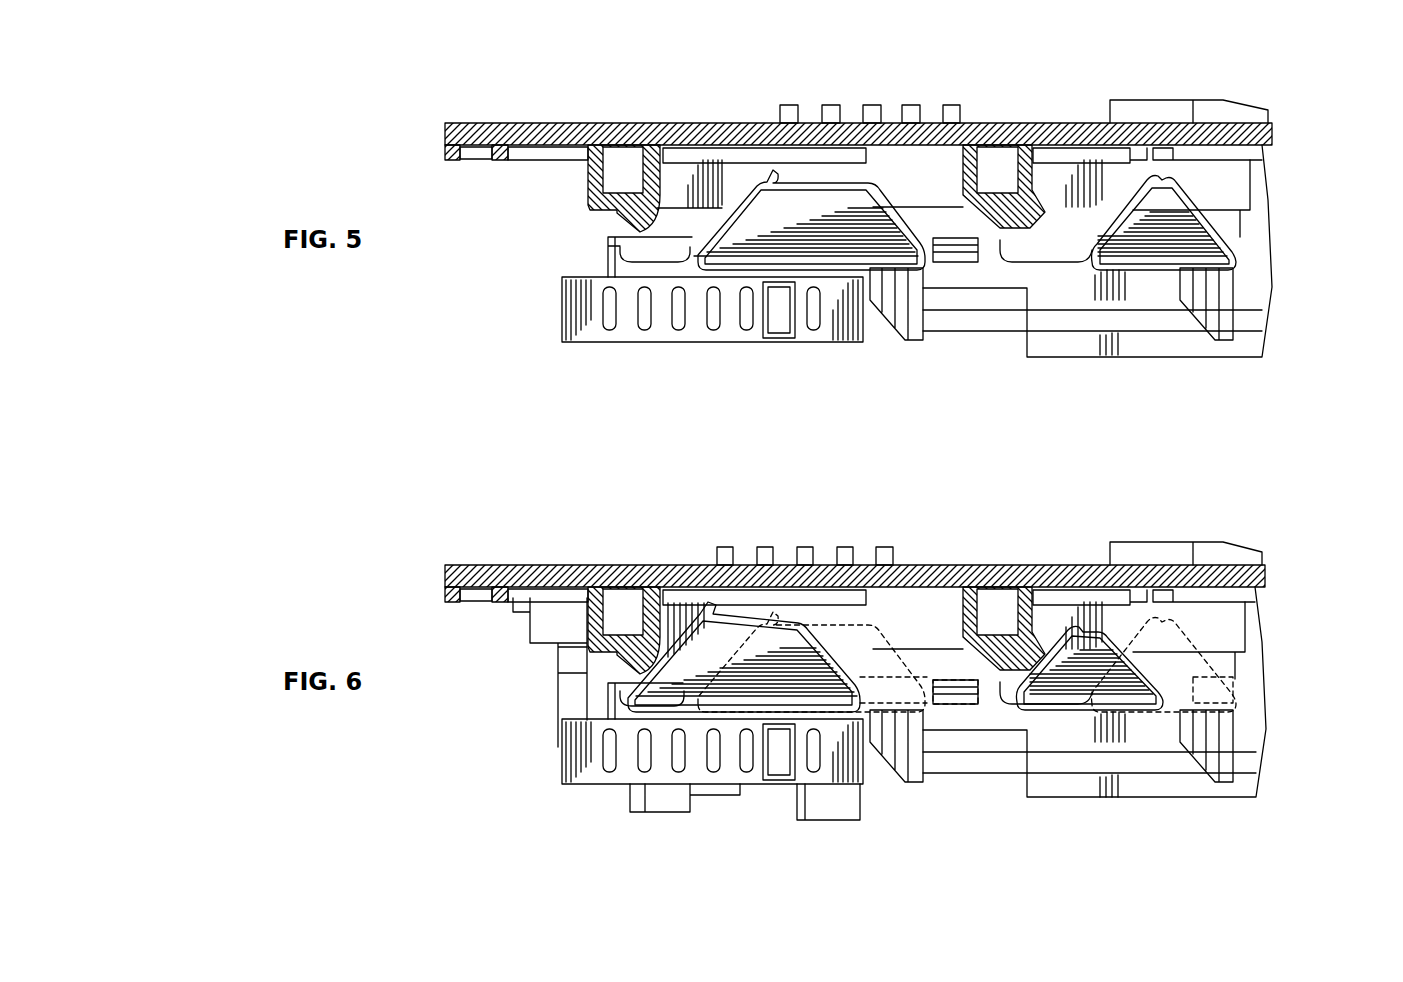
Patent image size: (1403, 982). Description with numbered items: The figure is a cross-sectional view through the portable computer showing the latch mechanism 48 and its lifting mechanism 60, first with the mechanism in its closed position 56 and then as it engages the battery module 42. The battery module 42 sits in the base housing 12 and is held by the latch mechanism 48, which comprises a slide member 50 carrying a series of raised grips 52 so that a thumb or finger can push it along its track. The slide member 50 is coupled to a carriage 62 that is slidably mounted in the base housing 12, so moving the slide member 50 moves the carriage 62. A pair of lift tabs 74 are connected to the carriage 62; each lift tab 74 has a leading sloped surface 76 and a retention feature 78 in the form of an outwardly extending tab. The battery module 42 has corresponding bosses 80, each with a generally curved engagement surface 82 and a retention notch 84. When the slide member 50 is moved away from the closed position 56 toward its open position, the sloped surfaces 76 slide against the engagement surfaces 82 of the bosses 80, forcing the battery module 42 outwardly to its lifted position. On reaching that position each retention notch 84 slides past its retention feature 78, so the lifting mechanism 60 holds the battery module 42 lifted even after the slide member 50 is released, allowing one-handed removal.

In FIG. 5, the base housing 12 is at (1258, 322).
In FIG. 6, the base housing 12 is at (1123, 708).
In FIG. 5, the battery module 42 is at (522, 122).
In FIG. 6, the battery module 42 is at (855, 562).
In FIG. 5, the latch mechanism 48 is at (768, 88).
In FIG. 6, the latch mechanism 48 is at (691, 507).
In FIG. 5, the slide member 50 is at (973, 120).
In FIG. 6, the slide member 50 is at (1109, 551).
In FIG. 5, the raised grips 52 is at (791, 105).
In FIG. 6, the raised grips 52 is at (805, 530).
In FIG. 5, the closed position 56 is at (1160, 285).
In FIG. 6, the closed position 56 is at (1164, 753).
In FIG. 5, the lifting mechanism 60 is at (1272, 231).
In FIG. 6, the lifting mechanism 60 is at (1232, 609).
In FIG. 5, the carriage 62 is at (880, 170).
In FIG. 6, the carriage 62 is at (806, 553).
In FIG. 5, the lift tab 74 is at (817, 245).
In FIG. 6, the lift tab 74 is at (894, 752).
In FIG. 5, the sloped surface 76 is at (664, 170).
In FIG. 6, the sloped surface 76 is at (844, 585).
In FIG. 5, the retention feature 78 is at (773, 168).
In FIG. 6, the retention feature 78 is at (931, 604).
In FIG. 5, the boss 80 is at (590, 180).
In FIG. 6, the boss 80 is at (780, 636).
In FIG. 5, the engagement surface 82 is at (618, 185).
In FIG. 6, the engagement surface 82 is at (801, 764).
In FIG. 5, the retention notch 84 is at (590, 208).
In FIG. 6, the retention notch 84 is at (793, 716).